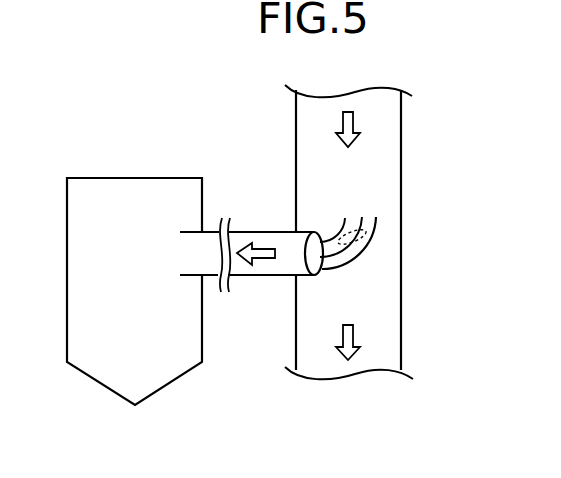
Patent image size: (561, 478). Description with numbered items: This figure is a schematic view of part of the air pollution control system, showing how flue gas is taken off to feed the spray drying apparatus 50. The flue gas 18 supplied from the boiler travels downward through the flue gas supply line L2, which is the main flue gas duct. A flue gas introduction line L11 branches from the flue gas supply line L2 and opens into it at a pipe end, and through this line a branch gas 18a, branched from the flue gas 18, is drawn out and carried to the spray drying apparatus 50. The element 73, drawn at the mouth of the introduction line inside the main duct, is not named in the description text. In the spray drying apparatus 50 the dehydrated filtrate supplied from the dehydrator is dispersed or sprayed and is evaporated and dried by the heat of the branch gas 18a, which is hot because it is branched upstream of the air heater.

The spray drying apparatus 50 is at (100, 165).
The flue gas 18 is at (342, 122).
The branch gas 18a is at (258, 277).
The flow stream from pipe outlet 73 is at (377, 232).
The flue gas introduction line L11 is at (254, 232).
The flue gas supply line L2 is at (401, 133).